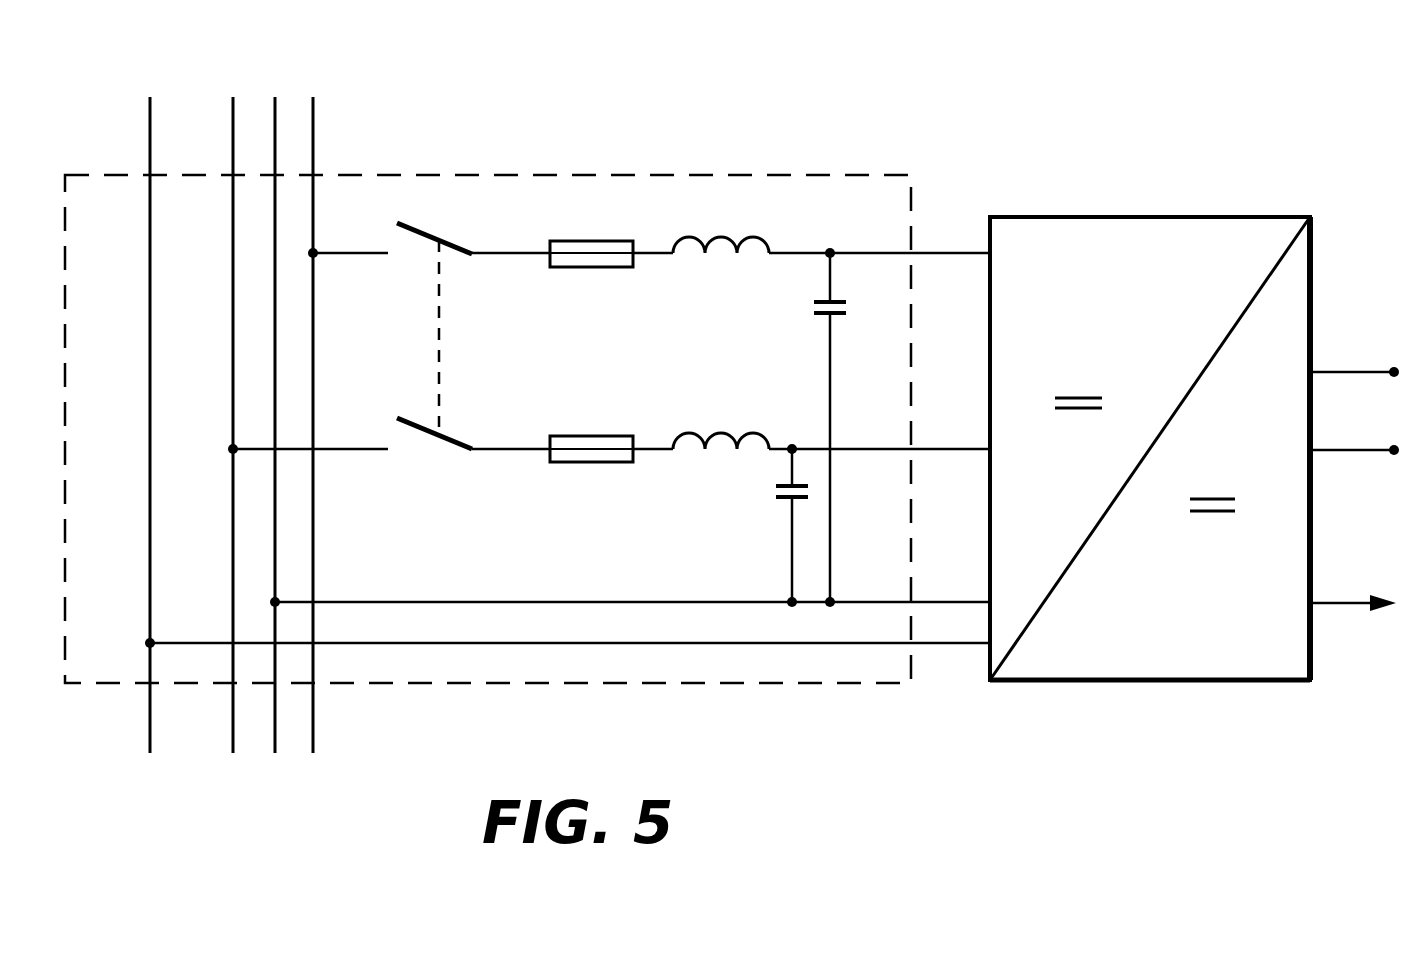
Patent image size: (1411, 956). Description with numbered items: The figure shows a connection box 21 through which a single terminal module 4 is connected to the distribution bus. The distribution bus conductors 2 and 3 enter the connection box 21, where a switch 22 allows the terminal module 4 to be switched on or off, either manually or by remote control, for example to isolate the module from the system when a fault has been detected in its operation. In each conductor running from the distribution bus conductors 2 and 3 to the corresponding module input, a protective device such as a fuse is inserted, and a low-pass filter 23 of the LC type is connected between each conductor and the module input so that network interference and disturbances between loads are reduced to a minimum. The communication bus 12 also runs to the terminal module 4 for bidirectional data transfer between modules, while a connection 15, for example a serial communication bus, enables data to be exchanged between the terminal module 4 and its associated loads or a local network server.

The distribution bus conductor 2 is at (313, 145).
The distribution bus conductor 3 is at (233, 120).
The terminal module 4 is at (1310, 268).
The communication bus 12 is at (150, 122).
The connection 15 is at (1345, 605).
The connection box 21 is at (753, 175).
The switch 22 is at (450, 319).
The low-pass filter 23 is at (800, 284).